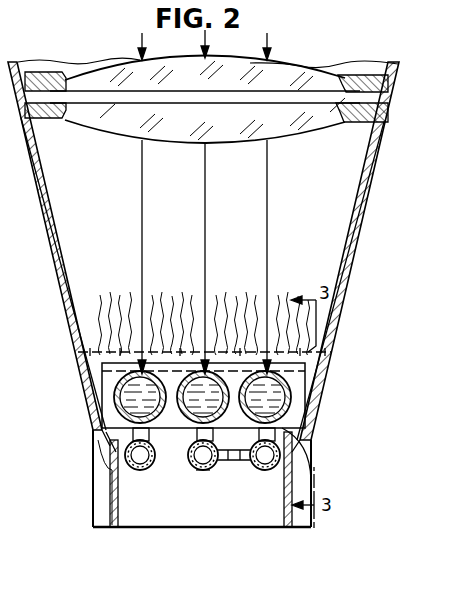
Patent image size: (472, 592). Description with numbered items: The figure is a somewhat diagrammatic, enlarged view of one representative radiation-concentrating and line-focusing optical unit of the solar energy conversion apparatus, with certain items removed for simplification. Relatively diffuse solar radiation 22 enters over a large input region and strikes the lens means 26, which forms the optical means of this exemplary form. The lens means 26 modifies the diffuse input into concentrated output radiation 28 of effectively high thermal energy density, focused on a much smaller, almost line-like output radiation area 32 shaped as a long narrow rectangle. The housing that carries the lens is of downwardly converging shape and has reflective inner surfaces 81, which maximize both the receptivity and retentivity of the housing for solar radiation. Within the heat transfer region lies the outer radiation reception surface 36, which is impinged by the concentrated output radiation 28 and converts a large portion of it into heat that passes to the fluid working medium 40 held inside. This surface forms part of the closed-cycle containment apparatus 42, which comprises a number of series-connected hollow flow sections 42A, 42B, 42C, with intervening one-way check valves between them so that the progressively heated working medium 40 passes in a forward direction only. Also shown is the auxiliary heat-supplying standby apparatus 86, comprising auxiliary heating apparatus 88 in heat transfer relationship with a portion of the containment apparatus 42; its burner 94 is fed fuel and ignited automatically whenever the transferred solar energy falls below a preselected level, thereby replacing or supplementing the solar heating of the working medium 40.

The solar radiation 22 is at (271, 45).
The lens means 26 is at (100, 78).
The concentrated output radiation 28 is at (142, 210).
The output radiation area 32 is at (340, 333).
The outer radiation reception surface 36 is at (160, 296).
The fluid working medium 40 is at (298, 418).
The closed-cycle containment apparatus 42 is at (308, 381).
The hollow flow section 42A is at (316, 430).
The hollow flow section 42B is at (183, 440).
The hollow flow section 42C is at (108, 397).
The reflective inner surfaces 81 is at (48, 172).
The auxiliary heat-supplying standby apparatus 86 is at (346, 354).
The auxiliary heating apparatus 88 is at (206, 485).
The burner 94 is at (140, 468).